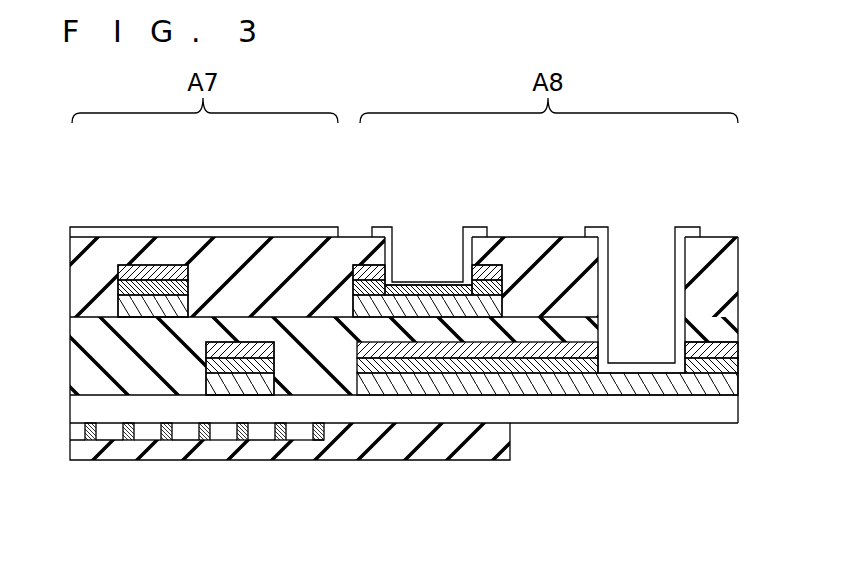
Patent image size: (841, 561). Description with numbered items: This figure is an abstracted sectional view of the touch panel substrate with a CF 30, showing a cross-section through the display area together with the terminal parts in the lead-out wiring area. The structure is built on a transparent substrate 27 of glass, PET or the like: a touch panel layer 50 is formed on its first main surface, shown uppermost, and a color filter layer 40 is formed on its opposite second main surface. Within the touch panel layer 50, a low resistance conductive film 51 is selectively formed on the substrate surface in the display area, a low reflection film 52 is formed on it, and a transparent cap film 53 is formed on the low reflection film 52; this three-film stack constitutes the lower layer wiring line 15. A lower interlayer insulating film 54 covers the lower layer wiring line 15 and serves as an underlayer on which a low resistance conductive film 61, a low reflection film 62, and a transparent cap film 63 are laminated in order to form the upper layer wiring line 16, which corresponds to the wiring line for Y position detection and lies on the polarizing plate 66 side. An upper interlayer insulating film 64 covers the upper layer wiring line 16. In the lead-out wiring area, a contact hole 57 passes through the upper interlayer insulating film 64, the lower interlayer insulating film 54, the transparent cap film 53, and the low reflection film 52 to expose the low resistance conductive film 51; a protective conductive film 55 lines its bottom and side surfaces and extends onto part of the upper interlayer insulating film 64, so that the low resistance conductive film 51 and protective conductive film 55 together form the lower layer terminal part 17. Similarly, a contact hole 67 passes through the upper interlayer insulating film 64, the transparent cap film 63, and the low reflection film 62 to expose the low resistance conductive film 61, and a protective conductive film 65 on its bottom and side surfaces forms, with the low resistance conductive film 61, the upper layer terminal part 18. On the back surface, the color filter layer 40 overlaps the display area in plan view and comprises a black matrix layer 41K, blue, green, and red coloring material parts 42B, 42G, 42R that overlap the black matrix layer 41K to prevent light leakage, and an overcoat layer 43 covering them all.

The lower layer wiring line 15 is at (188, 163).
The upper layer wiring line 16 is at (177, 163).
The lower layer terminal part 17 is at (680, 184).
The upper layer terminal part 18 is at (372, 184).
The transparent substrate 27 is at (738, 409).
The touch panel substrate with a CF 30 is at (666, 82).
The color filter layer 40 is at (62, 425).
The black matrix layer 41K is at (318, 441).
The coloring material parts (green) 42G is at (145, 437).
The coloring material parts (red) 42R is at (220, 436).
The coloring material parts (blue) 42B is at (297, 436).
The overcoat layer 43 is at (510, 446).
The touch panel layer 50 is at (68, 235).
The low resistance conductive film 51 is at (220, 380).
The low reflection film 52 is at (237, 362).
The transparent cap film 53 is at (255, 350).
The lower interlayer insulating film 54 is at (100, 382).
The protective conductive film 55 is at (688, 228).
The contact hole 57 is at (648, 245).
The low resistance conductive film 61 is at (118, 303).
The low reflection film 62 is at (140, 278).
The transparent cap film 63 is at (162, 265).
The upper interlayer insulating film 64 is at (343, 265).
The protective conductive film 65 is at (382, 228).
The polarizing plate 66 is at (305, 230).
The contact hole 67 is at (440, 240).